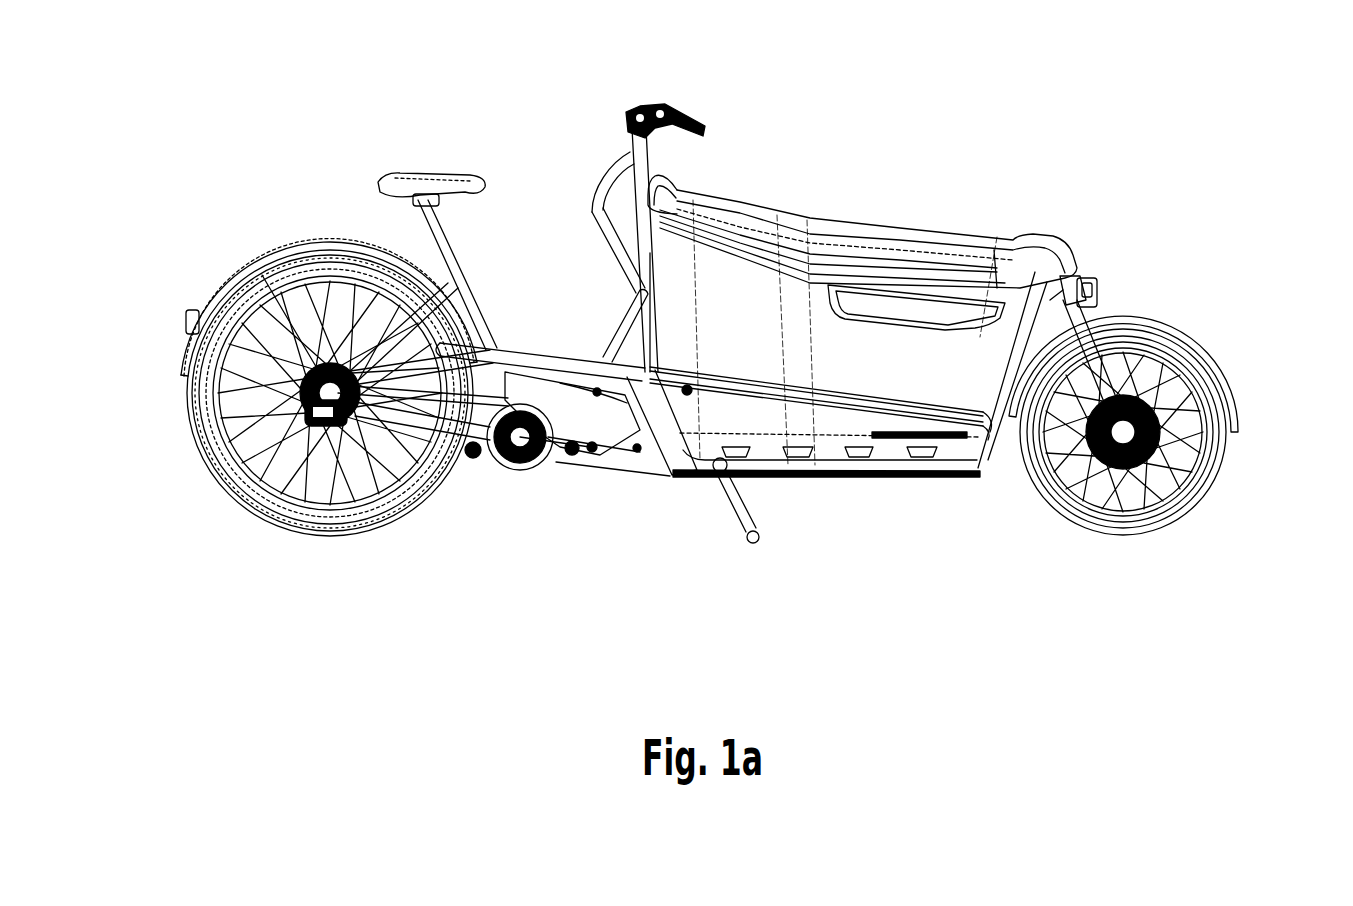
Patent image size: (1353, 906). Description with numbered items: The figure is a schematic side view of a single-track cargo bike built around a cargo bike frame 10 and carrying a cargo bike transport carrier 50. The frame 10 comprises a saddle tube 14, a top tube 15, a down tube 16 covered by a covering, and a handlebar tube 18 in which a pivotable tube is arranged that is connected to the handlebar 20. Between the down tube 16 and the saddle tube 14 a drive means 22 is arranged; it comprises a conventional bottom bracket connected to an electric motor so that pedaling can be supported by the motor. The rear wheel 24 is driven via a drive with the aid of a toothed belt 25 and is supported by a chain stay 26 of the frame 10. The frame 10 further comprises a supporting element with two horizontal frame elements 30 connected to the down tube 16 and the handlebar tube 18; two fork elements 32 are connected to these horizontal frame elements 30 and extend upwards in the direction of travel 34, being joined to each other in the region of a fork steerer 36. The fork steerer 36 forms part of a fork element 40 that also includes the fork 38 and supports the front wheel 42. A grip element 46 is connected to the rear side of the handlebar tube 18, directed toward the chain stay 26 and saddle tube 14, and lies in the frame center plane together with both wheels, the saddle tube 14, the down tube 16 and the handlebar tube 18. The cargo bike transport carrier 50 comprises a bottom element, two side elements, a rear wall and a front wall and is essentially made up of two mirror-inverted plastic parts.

The cargo bike frame 10 is at (585, 325).
The saddle tube 14 is at (468, 292).
The top tube 15 is at (530, 350).
The down tube 16 is at (600, 452).
The handlebar tube 18 is at (628, 143).
The handlebar 20 is at (660, 110).
The drive means 22 is at (510, 490).
The rear wheel 24 is at (227, 488).
The toothed belt 25 is at (413, 513).
The chain stay 26 is at (367, 433).
The horizontal frame elements 30 is at (823, 467).
The fork elements 32 is at (982, 455).
The direction of travel 34 is at (1058, 140).
The fork steerer 36 is at (1072, 270).
The fork 38 is at (1130, 366).
The fork element 40 is at (1112, 267).
The front wheel 42 is at (1225, 480).
The grip element 46 is at (600, 178).
The cargo bike transport carrier 50 is at (808, 200).